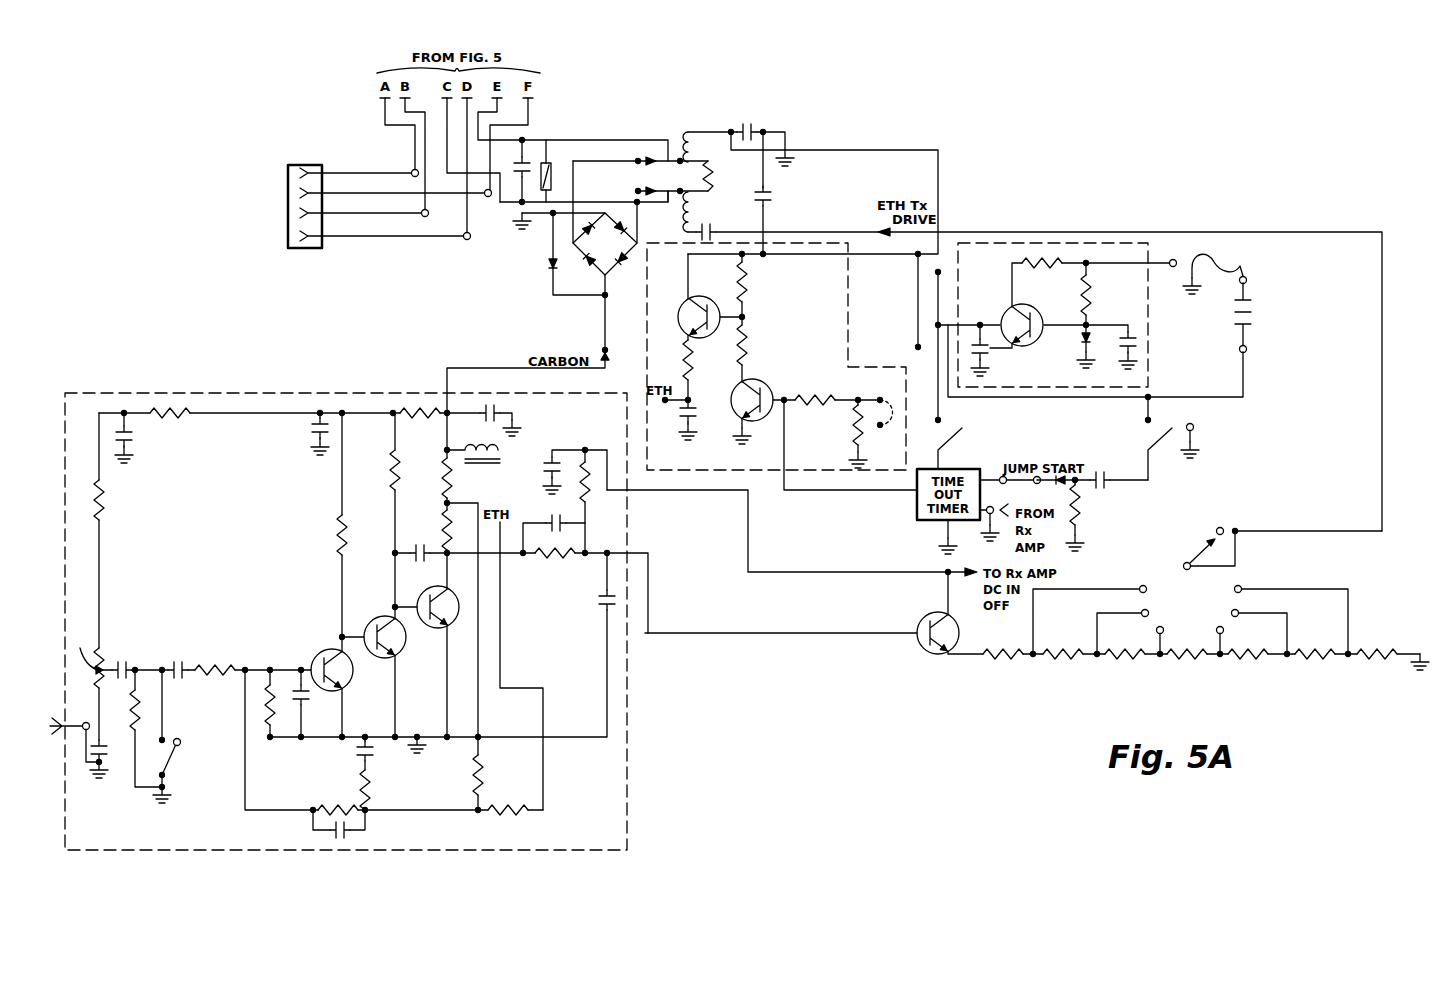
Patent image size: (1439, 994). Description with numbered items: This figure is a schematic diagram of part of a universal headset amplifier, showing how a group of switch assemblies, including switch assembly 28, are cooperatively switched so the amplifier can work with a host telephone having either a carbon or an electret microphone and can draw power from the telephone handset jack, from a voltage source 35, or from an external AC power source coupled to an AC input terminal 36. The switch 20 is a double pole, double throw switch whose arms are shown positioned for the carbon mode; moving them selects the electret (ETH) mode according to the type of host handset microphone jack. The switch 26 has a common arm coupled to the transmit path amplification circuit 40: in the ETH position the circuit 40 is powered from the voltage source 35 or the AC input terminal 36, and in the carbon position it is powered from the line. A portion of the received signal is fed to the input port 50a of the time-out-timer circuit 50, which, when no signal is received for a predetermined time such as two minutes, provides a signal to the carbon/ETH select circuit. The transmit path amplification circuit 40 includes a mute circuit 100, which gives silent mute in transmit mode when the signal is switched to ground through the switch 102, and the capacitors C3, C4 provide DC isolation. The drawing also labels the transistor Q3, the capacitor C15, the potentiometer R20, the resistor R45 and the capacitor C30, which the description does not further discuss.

The switch 20 is at (668, 128).
The switch 26 is at (594, 348).
The switch assembly 28 is at (955, 425).
The voltage source 35 is at (1258, 346).
The AC input terminal 36 is at (1065, 315).
The transmit path amplification circuit 40 is at (137, 385).
The time-out-timer circuit 50 is at (980, 455).
The input port 50a is at (994, 476).
The mute circuit 100 is at (151, 652).
The switch 102 is at (177, 771).
The transistor Q3 is at (678, 303).
The capacitor C15 is at (776, 197).
The potentiometer R20 is at (86, 659).
The capacitor C3 is at (121, 659).
The capacitor C4 is at (176, 656).
The resistor R45 is at (508, 776).
The capacitor C30 is at (356, 841).